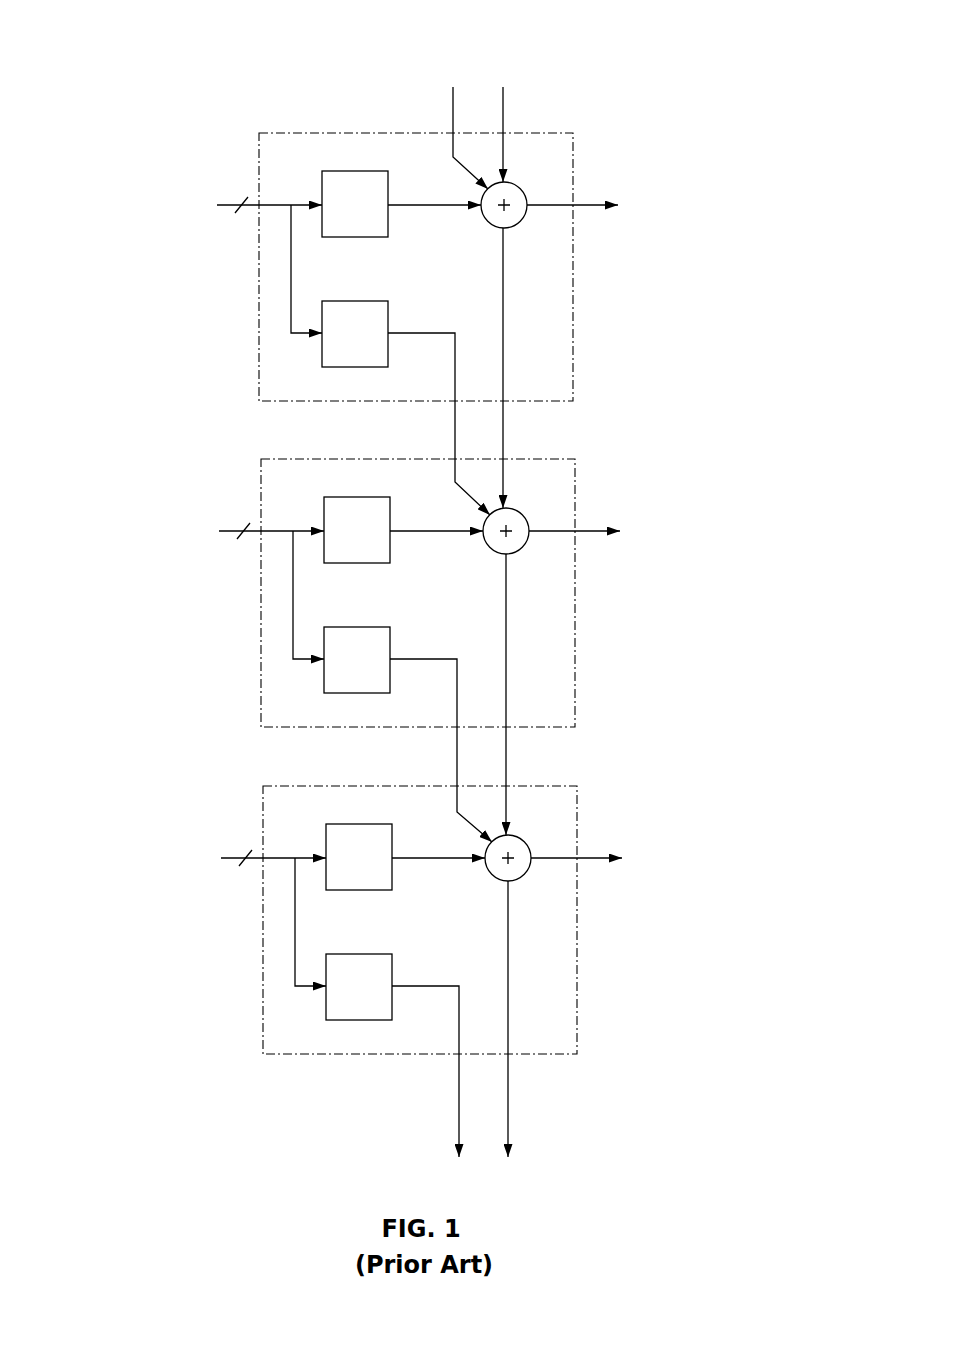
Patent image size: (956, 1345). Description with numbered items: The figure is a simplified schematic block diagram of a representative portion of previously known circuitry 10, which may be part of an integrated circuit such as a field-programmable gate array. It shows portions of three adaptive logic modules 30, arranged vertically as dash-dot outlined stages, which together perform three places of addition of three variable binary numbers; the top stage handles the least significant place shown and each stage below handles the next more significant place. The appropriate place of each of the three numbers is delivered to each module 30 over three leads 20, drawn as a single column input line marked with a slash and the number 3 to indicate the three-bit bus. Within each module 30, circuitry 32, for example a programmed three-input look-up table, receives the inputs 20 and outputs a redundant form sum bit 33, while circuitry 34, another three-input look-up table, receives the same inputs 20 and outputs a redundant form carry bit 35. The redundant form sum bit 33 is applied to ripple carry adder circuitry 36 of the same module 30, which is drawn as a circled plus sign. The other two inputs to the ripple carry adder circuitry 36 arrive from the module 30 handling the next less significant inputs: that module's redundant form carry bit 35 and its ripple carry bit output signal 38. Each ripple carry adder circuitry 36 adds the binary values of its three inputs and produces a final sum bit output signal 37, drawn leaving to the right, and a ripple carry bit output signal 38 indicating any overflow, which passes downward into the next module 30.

The circuitry 10 is at (176, 52).
The bus width of column input 3 is at (244, 518).
The leads 20 is at (222, 207).
The adaptive logic module 30 is at (573, 343).
The circuitry 32 is at (355, 171).
The redundant form sum bit 33 is at (414, 207).
The circuitry 34 is at (322, 348).
The redundant form carry bit 35 is at (452, 105).
The ripple carry adder circuitry 36 is at (522, 182).
The final sum bit output signal 37 is at (591, 204).
The ripple carry bit output signal 38 is at (506, 105).